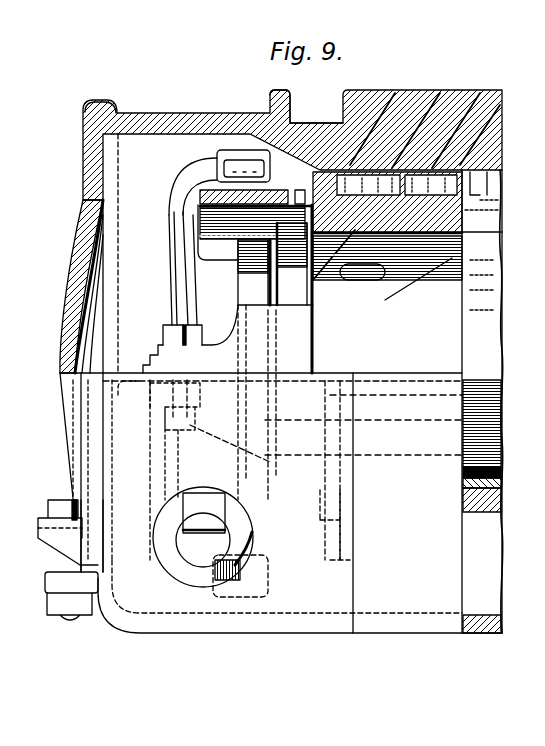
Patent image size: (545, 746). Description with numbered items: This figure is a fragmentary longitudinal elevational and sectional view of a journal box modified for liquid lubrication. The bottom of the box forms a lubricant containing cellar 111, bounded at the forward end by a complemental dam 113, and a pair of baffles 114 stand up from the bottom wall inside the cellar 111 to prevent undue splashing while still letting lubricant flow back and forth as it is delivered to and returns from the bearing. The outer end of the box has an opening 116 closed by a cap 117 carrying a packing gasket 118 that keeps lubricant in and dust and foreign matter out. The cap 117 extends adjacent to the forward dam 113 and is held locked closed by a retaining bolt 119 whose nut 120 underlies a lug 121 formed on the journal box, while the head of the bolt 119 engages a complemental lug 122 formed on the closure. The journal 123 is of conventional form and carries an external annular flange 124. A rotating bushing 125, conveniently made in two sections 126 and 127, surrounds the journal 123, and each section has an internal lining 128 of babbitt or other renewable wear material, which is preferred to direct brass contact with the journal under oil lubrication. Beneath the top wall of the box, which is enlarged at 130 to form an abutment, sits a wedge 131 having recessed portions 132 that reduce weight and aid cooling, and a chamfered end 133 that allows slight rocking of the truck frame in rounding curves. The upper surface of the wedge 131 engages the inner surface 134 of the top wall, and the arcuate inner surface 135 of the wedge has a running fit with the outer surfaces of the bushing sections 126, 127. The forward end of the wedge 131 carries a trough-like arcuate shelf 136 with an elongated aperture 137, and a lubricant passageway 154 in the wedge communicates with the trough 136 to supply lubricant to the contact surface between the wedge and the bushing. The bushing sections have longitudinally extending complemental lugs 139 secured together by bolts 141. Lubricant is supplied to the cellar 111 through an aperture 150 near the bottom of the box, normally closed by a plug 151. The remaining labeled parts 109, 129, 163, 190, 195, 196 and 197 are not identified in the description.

The slot 109 is at (368, 290).
The lubricant containing cellar 111 is at (475, 625).
The complemental dam 113 is at (110, 550).
The baffles 114 is at (330, 580).
The opening 116 is at (103, 164).
The cap 117 is at (72, 278).
The packing gasket 118 is at (117, 118).
The retaining bolt 119 is at (70, 562).
The nut 120 is at (57, 607).
The lug 121 is at (45, 582).
The complemental lug 122 is at (60, 517).
The journal 123 is at (500, 453).
The external annular flange 124 is at (238, 260).
The rotating bushing 125 is at (485, 250).
The bushing section 126 is at (500, 506).
The bushing section 127 is at (485, 305).
The internal lining 128 is at (500, 482).
The plate 129 is at (380, 125).
The enlarged top wall portion 130 is at (470, 164).
The wedge 131 is at (455, 140).
The recessed portions 132 is at (422, 128).
The chamfered end 133 is at (318, 123).
The inner surface of journal box top wall 134 is at (488, 150).
The inner surface of wedge 135 is at (292, 264).
The trough-like arcuate element 136 is at (193, 188).
The elongated aperture 137 is at (296, 198).
The complemental lug 139 is at (228, 339).
The bolts 141 is at (174, 331).
The aperture 150 is at (258, 560).
The plug 151 is at (206, 497).
The lubricant passageway 154 is at (387, 202).
The coil 163 is at (251, 232).
The rod 190 is at (218, 427).
The rod 195 is at (169, 200).
The cam disk 196 is at (172, 574).
The block 197 is at (252, 600).